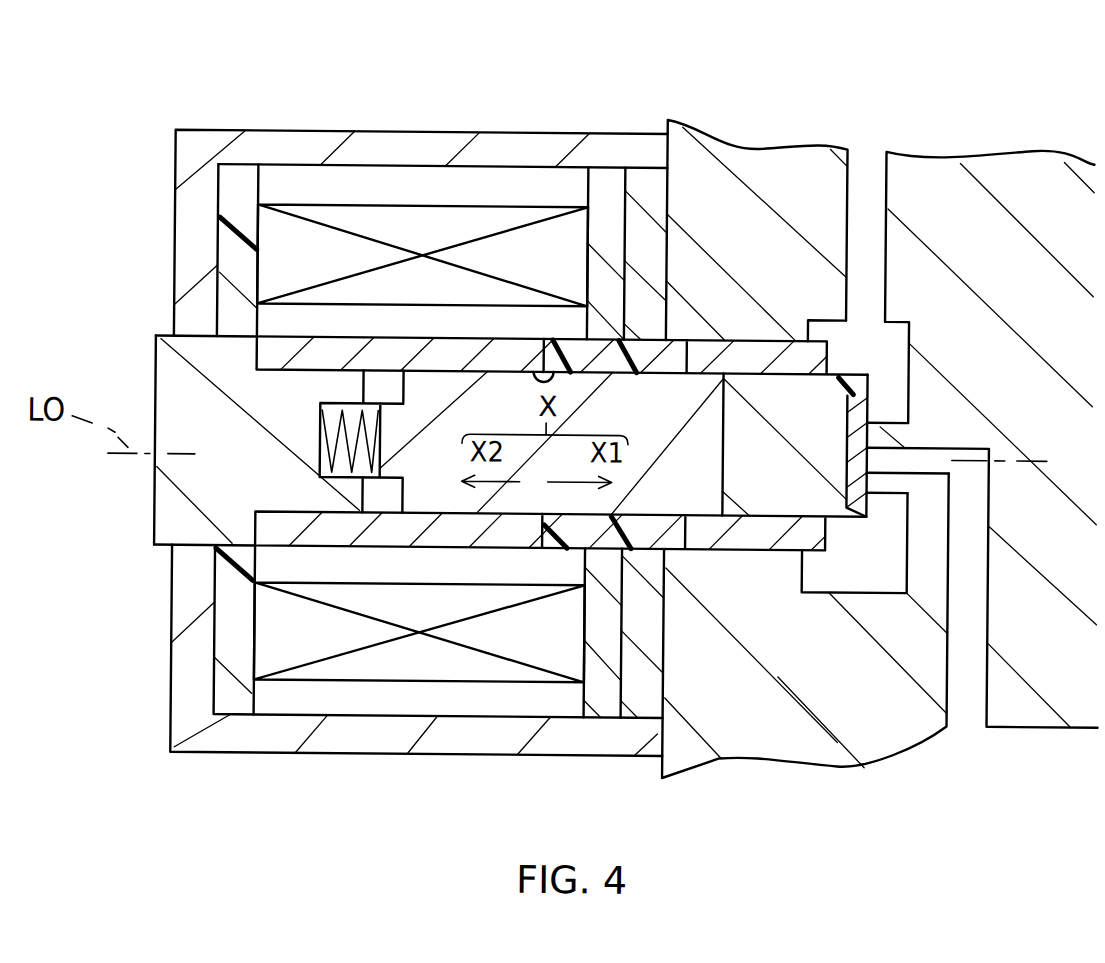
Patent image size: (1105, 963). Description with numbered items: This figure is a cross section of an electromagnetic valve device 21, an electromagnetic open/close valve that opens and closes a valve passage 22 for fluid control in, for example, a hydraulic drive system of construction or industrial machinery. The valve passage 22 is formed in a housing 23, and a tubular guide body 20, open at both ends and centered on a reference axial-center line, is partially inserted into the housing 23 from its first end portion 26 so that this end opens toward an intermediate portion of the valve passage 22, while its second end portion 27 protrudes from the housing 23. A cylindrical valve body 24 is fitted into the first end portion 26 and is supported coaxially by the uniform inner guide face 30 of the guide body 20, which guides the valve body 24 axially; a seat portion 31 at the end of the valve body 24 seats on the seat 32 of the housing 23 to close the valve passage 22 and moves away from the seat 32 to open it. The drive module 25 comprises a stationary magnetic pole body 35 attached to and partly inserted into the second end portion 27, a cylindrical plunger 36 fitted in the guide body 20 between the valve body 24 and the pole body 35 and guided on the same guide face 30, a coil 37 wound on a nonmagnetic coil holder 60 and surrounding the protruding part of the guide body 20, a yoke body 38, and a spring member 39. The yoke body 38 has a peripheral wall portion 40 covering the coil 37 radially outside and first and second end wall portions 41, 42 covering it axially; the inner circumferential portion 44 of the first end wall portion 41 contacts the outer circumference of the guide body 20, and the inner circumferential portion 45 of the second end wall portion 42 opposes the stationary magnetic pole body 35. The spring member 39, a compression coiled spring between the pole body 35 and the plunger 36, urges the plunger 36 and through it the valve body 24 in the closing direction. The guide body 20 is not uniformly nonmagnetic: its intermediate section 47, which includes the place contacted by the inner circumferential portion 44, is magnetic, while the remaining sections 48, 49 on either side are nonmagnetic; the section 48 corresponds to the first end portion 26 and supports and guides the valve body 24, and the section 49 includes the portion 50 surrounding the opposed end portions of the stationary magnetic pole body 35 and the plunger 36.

The guide body 20 is at (392, 318).
The electromagnetic valve device 21 is at (505, 116).
The valve passage 22 is at (976, 550).
The housing 23 is at (1000, 172).
The valve body 24 is at (753, 540).
The drive module 25 is at (156, 187).
The first end portion 26 is at (753, 335).
The second end portion 27 is at (292, 340).
The guide face 30 is at (536, 340).
The seat portion 31 is at (858, 390).
The seat 32 is at (847, 440).
The stationary magnetic pole body 35 is at (177, 473).
The plunger 36 is at (447, 378).
The coil 37 is at (352, 218).
The yoke body 38 is at (546, 136).
The spring member 39 is at (318, 455).
The peripheral wall portion 40 is at (441, 138).
The first end wall portion 41 is at (666, 249).
The second end wall portion 42 is at (190, 216).
The inner circumferential portion 44 is at (667, 316).
The inner circumferential portion 45 is at (195, 323).
The intermediate section 47 is at (577, 543).
The section 48 is at (707, 550).
The section 49 is at (465, 542).
The portion 50 is at (372, 544).
The coil holder 60 is at (240, 258).